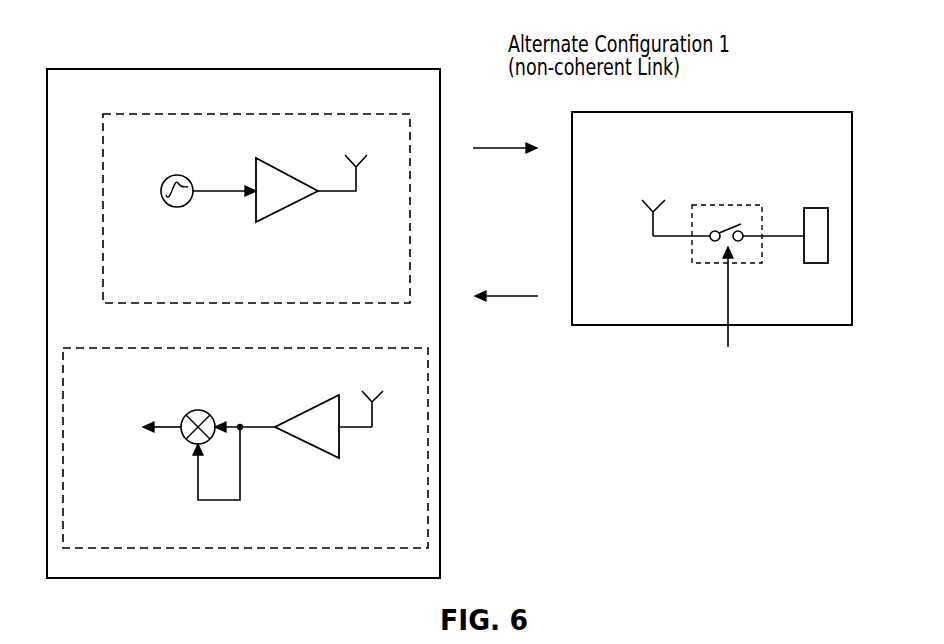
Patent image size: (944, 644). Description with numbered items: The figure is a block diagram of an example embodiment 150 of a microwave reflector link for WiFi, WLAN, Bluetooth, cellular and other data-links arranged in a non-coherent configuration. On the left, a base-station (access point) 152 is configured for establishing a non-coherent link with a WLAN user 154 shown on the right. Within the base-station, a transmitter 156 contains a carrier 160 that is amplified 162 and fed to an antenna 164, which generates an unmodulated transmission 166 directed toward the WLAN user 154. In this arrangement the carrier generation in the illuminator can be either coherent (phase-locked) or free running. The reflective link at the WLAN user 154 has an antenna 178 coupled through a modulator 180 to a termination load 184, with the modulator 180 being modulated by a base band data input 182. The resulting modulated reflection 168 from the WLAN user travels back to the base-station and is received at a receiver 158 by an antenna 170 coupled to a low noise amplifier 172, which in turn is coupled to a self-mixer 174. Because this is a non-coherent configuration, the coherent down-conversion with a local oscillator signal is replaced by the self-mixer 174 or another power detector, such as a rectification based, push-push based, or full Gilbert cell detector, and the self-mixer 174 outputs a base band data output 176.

The example embodiment 150 is at (118, 32).
The base-station (access point) 152 is at (313, 67).
The WLAN user 154 is at (752, 110).
The transmitter 156 is at (312, 307).
The receiver 158 is at (113, 347).
The carrier 160 is at (177, 208).
The amplifier 162 is at (290, 207).
The antenna 164 is at (338, 193).
The unmodulated transmission 166 is at (490, 145).
The modulated reflection 168 is at (502, 295).
The antenna 170 is at (358, 430).
The low noise amplifier 172 is at (310, 447).
The self-mixer 174 is at (218, 414).
The base band data output 176 is at (167, 423).
The antenna 178 is at (652, 222).
The modulator 180 is at (693, 267).
The base band data input 182 is at (780, 365).
The termination load 184 is at (815, 265).